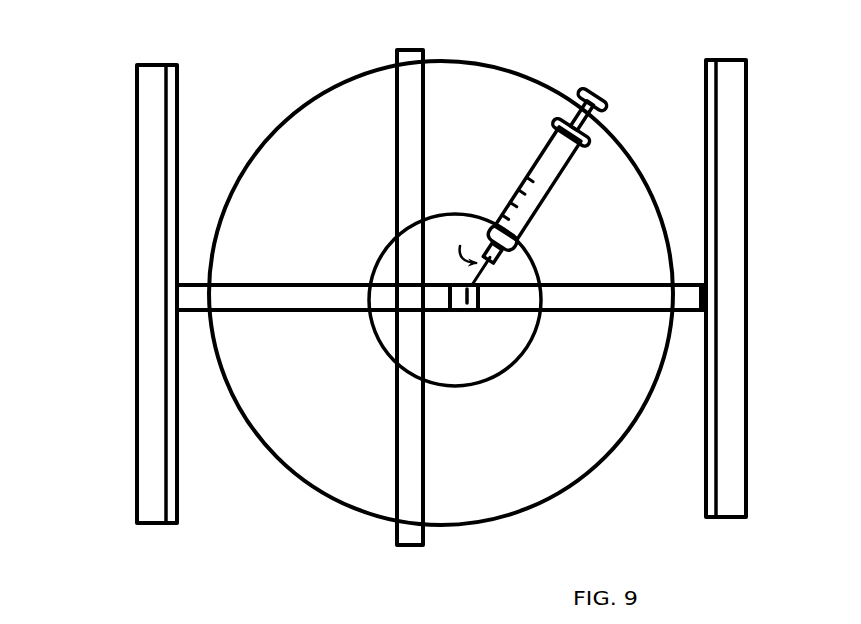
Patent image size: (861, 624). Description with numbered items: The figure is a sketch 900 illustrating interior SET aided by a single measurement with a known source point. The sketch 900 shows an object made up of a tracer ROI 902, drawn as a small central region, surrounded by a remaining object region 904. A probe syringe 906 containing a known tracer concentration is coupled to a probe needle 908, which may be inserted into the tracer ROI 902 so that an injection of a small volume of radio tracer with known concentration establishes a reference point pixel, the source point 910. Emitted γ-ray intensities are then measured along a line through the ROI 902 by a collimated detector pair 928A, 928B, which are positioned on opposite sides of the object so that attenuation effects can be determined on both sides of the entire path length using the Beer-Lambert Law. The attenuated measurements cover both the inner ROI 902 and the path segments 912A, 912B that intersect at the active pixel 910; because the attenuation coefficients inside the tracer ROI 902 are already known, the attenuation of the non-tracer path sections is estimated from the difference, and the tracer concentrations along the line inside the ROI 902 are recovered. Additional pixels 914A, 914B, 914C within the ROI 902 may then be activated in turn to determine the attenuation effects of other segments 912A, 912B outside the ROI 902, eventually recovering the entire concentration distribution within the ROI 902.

The sketch 900 is at (100, 44).
The tracer ROI 902 is at (468, 373).
The remaining object region 904 is at (517, 470).
The probe syringe 906 is at (548, 173).
The probe needle 908 is at (463, 243).
The source point 910 is at (471, 312).
The path segment 912A is at (326, 301).
The path segment 912B is at (407, 125).
The pixel 914A is at (392, 300).
The pixel 914B is at (409, 300).
The pixel 914C is at (438, 312).
The collimated detector 928A is at (150, 529).
The collimated detector 928B is at (719, 527).